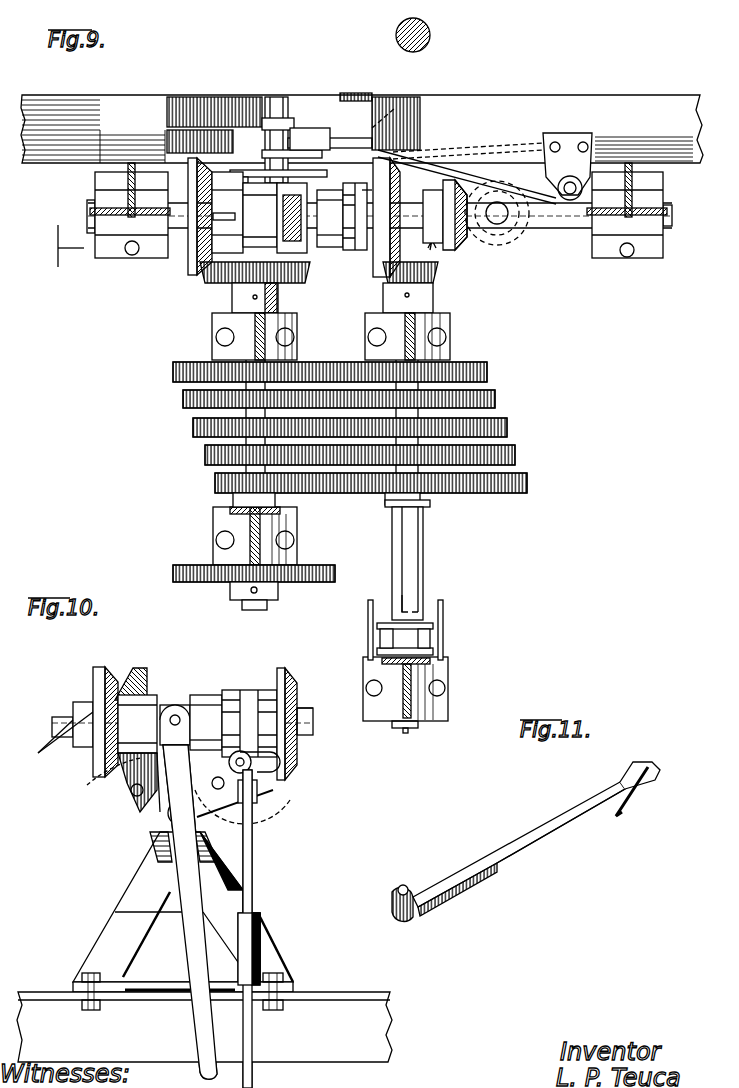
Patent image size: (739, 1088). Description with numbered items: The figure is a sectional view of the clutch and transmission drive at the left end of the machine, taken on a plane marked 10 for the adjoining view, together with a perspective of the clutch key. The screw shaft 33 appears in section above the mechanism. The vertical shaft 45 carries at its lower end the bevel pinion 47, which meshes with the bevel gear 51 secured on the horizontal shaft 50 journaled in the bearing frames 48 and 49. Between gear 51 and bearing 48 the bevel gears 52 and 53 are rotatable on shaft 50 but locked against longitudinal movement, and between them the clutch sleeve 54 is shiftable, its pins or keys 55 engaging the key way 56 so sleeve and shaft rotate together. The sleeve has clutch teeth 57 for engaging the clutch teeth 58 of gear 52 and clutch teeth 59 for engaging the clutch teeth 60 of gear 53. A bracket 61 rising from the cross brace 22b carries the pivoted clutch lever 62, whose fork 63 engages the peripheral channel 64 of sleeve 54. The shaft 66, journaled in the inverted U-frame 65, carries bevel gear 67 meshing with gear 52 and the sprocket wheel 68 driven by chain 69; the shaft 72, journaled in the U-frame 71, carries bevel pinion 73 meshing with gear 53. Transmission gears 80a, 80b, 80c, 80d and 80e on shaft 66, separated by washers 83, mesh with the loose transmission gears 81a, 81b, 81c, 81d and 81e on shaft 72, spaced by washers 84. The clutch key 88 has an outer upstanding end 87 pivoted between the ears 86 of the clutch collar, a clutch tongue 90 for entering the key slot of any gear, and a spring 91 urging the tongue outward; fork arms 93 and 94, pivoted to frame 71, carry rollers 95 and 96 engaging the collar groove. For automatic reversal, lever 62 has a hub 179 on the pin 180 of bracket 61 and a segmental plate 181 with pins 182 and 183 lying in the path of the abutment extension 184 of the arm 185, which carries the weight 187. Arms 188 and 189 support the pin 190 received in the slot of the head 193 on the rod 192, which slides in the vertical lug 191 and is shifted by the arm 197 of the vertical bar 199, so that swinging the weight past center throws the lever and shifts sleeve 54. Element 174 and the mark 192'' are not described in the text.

In FIG. 9, the plane 10 is at (243, 246).
In FIG. 10, the cross brace 22b is at (342, 1018).
In FIG. 9, the screw shaft 33 is at (430, 37).
In FIG. 9, the vertical shaft 45 is at (500, 236).
In FIG. 9, the bevel pinion 47 is at (520, 240).
In FIG. 9, the bearing frame 48 is at (112, 262).
In FIG. 9, the bearing frame 49 is at (655, 260).
In FIG. 9, the horizontal shaft 50 is at (545, 222).
In FIG. 10, the horizontal shaft 50 is at (52, 722).
In FIG. 9, the bevel gear 51 is at (462, 252).
In FIG. 9, the bevel gear 52 is at (185, 270).
In FIG. 10, the bevel gear 52 is at (98, 670).
In FIG. 9, the bevel gear 53 is at (375, 268).
In FIG. 10, the bevel gear 53 is at (305, 665).
In FIG. 9, the clutch sleeve 54 is at (330, 218).
In FIG. 10, the clutch sleeve 54 is at (206, 722).
In FIG. 9, the pins or keys 55 is at (260, 215).
In FIG. 10, the pins or keys 55 is at (140, 700).
In FIG. 9, the key way 56 is at (223, 220).
In FIG. 9, the clutch teeth 57 is at (236, 168).
In FIG. 9, the clutch teeth 58 is at (235, 178).
In FIG. 9, the clutch teeth 59 is at (372, 205).
In FIG. 10, the clutch teeth 59 is at (240, 700).
In FIG. 9, the clutch teeth 60 is at (395, 232).
In FIG. 10, the clutch teeth 60 is at (300, 690).
In FIG. 9, the bracket 61 is at (172, 103).
In FIG. 10, the bracket 61 is at (220, 862).
In FIG. 10, the clutch lever 62 is at (180, 848).
In FIG. 9, the fork 63 is at (240, 300).
In FIG. 10, the fork 63 is at (175, 715).
In FIG. 9, the peripheral channel 64 is at (355, 195).
In FIG. 9, the inverted U-frame 65 is at (262, 335).
In FIG. 9, the shaft 66 is at (252, 610).
In FIG. 9, the bevel gear 67 is at (230, 283).
In FIG. 9, the sprocket wheel 68 is at (278, 590).
In FIG. 9, the chain 69 is at (330, 568).
In FIG. 9, the inverted U-frame 71 is at (415, 335).
In FIG. 9, the shaft 72 is at (423, 535).
In FIG. 9, the bevel pinion 73 is at (436, 275).
In FIG. 9, the transmission gear 80a is at (215, 485).
In FIG. 9, the transmission gear 80b is at (205, 455).
In FIG. 9, the transmission gear 80c is at (193, 427).
In FIG. 9, the transmission gear 80d is at (183, 400).
In FIG. 9, the transmission gear 80e is at (173, 372).
In FIG. 9, the transmission gear 81a is at (520, 493).
In FIG. 9, the transmission gear 81b is at (515, 452).
In FIG. 9, the transmission gear 81c is at (507, 424).
In FIG. 9, the transmission gear 81d is at (495, 398).
In FIG. 9, the transmission gear 81e is at (487, 372).
In FIG. 9, the washers 83 is at (242, 468).
In FIG. 9, the washers 84 is at (422, 470).
In FIG. 9, the ears 86 is at (398, 608).
In FIG. 11, the outer upstanding end 87 is at (392, 905).
In FIG. 9, the clutch key 88 is at (408, 565).
In FIG. 11, the clutch key 88 is at (517, 853).
In FIG. 11, the clutch tongue 90 is at (640, 760).
In FIG. 11, the spring 91 is at (632, 805).
In FIG. 9, the fork arm 93 is at (368, 615).
In FIG. 9, the fork arm 94 is at (443, 616).
In FIG. 9, the projection or roller 95 is at (380, 640).
In FIG. 9, the projection or roller 96 is at (430, 640).
In FIG. 10, the link 174 is at (300, 765).
In FIG. 10, the hub 179 is at (170, 820).
In FIG. 10, the pin 180 is at (172, 822).
In FIG. 9, the segmental plate 181 is at (248, 105).
In FIG. 10, the segmental plate 181 is at (150, 802).
In FIG. 9, the pin 182 is at (215, 110).
In FIG. 10, the pin 182 is at (128, 790).
In FIG. 9, the pin 183 is at (292, 218).
In FIG. 10, the pin 183 is at (260, 805).
In FIG. 9, the abutment extension 184 is at (275, 126).
In FIG. 10, the abutment extension 184 is at (90, 786).
In FIG. 10, the arm 185 is at (38, 753).
In FIG. 9, the weight 187 is at (420, 100).
In FIG. 10, the weight 187 is at (137, 670).
In FIG. 9, the arm 188 is at (287, 120).
In FIG. 9, the arm 189 is at (305, 130).
In FIG. 10, the pin 190 is at (242, 752).
In FIG. 10, the vertical lug 191 is at (262, 930).
In FIG. 10, the rod 192 is at (272, 929).
In FIG. 9, the rod 192'' is at (373, 82).
In FIG. 10, the head 193 is at (296, 790).
In FIG. 9, the arm 197 is at (510, 170).
In FIG. 9, the vertical bar 199 is at (575, 182).